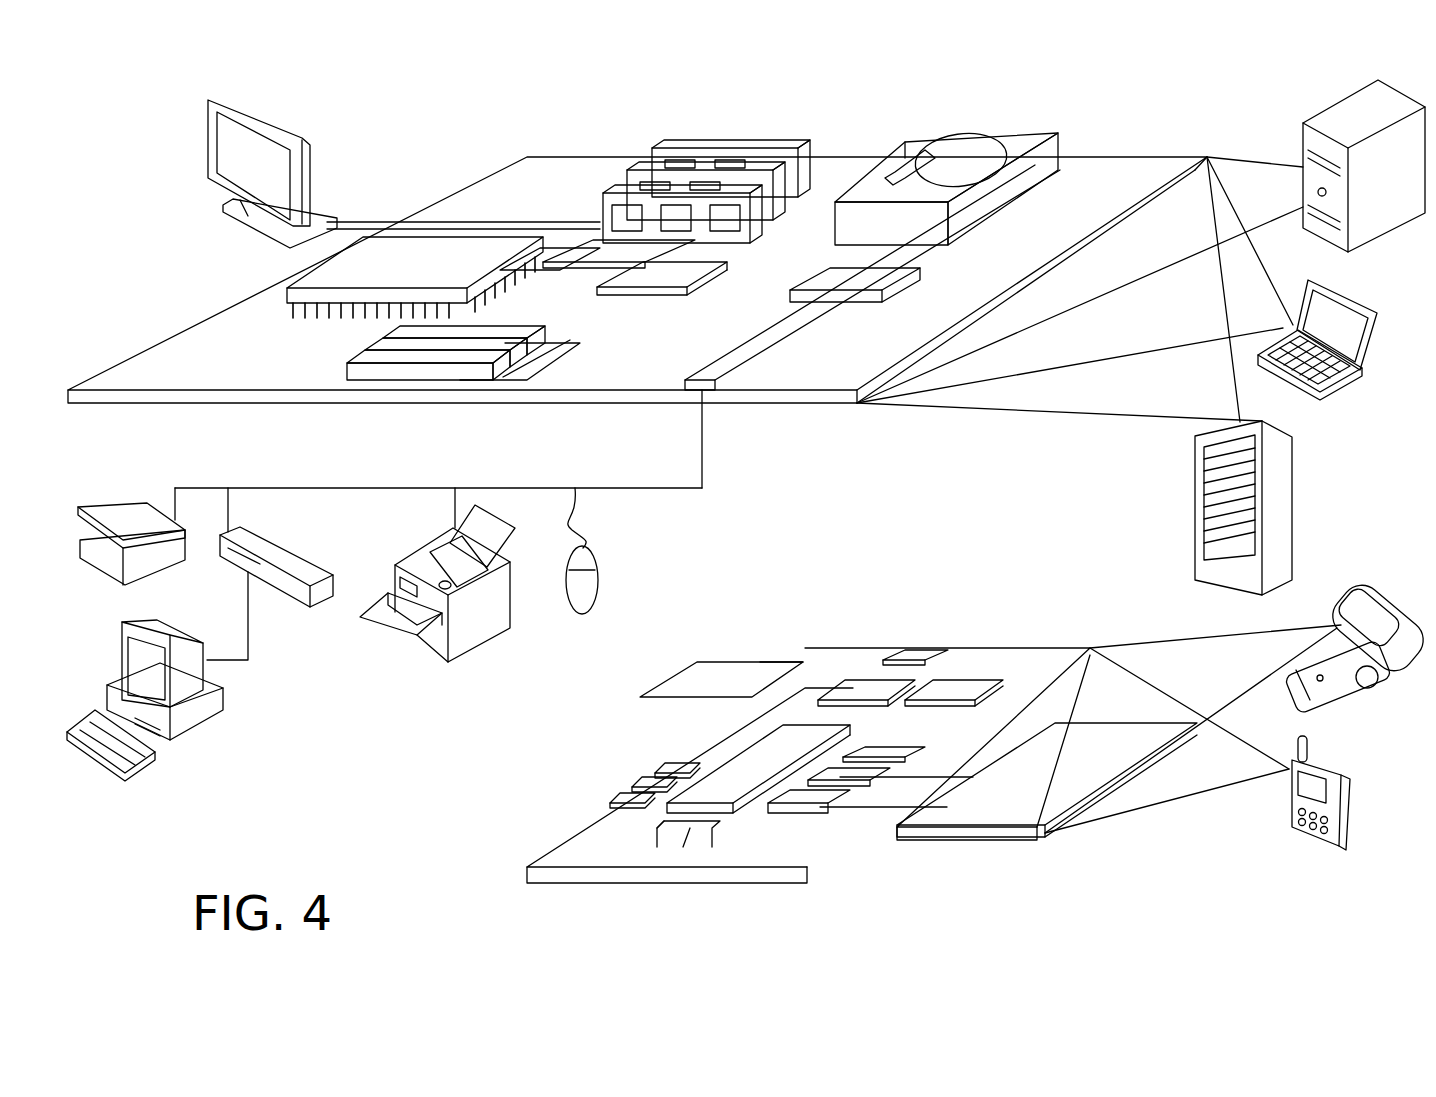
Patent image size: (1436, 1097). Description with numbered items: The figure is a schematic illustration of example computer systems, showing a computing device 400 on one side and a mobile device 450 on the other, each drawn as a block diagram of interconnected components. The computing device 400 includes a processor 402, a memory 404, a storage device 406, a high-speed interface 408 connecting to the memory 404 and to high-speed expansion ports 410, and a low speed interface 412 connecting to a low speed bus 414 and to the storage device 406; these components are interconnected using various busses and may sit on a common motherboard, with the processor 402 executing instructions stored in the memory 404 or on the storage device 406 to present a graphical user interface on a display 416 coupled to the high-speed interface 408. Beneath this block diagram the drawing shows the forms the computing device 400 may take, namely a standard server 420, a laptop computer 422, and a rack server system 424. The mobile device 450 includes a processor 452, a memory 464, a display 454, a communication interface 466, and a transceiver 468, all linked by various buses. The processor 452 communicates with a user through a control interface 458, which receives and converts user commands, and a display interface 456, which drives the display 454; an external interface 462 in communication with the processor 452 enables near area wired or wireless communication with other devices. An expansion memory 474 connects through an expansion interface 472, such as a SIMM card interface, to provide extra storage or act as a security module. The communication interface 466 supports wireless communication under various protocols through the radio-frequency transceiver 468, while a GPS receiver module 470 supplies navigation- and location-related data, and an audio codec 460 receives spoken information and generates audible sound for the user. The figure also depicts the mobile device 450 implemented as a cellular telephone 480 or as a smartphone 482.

The computing device 400 is at (406, 100).
The processor 402 is at (360, 277).
The memory 404 is at (706, 176).
The storage device 406 is at (946, 169).
The high-speed interface 408 is at (613, 200).
The high-speed expansion ports 410 is at (637, 280).
The low speed interface 412 is at (851, 208).
The low speed bus 414 is at (495, 525).
The display 416 is at (241, 153).
The standard server 420 is at (1329, 166).
The laptop computer 422 is at (1347, 335).
The rack server system 424 is at (1208, 508).
The mobile device 450 is at (878, 770).
The processor 452 is at (758, 828).
The display 454 is at (1047, 804).
The display interface 456 is at (818, 864).
The control interface 458 is at (877, 831).
The audio codec 460 is at (906, 808).
The external interface 462 is at (670, 884).
The memory 464 is at (630, 777).
The communication interface 466 is at (854, 663).
The transceiver 468 is at (959, 661).
The GPS receiver module 470 is at (909, 633).
The expansion interface 472 is at (758, 644).
The expansion memory 474 is at (718, 661).
The cellular telephone 480 is at (1357, 636).
The smartphone 482 is at (1279, 798).